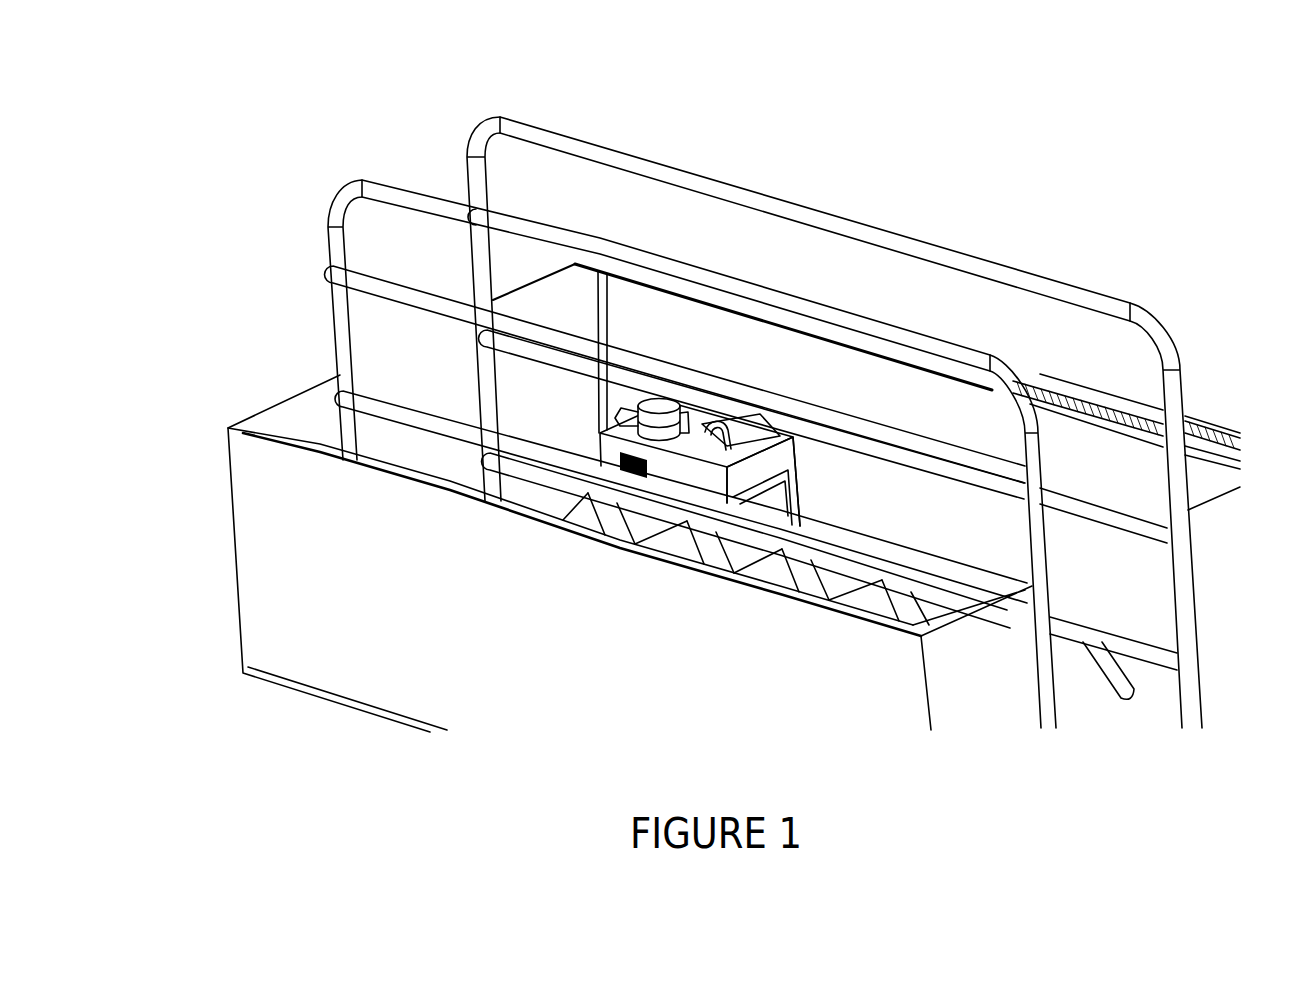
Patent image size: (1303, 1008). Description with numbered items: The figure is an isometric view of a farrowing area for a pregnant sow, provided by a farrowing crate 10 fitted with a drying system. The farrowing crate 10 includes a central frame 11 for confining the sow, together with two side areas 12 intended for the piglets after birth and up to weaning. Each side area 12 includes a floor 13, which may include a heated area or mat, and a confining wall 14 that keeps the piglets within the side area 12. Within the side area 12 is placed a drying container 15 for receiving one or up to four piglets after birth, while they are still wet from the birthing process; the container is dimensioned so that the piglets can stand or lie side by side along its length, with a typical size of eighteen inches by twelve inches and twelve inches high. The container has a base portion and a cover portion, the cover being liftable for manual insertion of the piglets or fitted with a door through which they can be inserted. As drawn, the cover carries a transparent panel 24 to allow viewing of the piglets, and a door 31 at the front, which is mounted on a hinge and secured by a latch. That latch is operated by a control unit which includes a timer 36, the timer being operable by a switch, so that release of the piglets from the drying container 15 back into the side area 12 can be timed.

The farrowing crate 10 is at (713, 496).
The central frame 11 is at (332, 340).
The side area 12 is at (1214, 474).
The floor 13 is at (1090, 706).
The confining wall 14 is at (313, 588).
The drying container 15 is at (780, 457).
The transparent panel 24 is at (829, 298).
The door 31 is at (773, 500).
The timer 36 is at (653, 400).